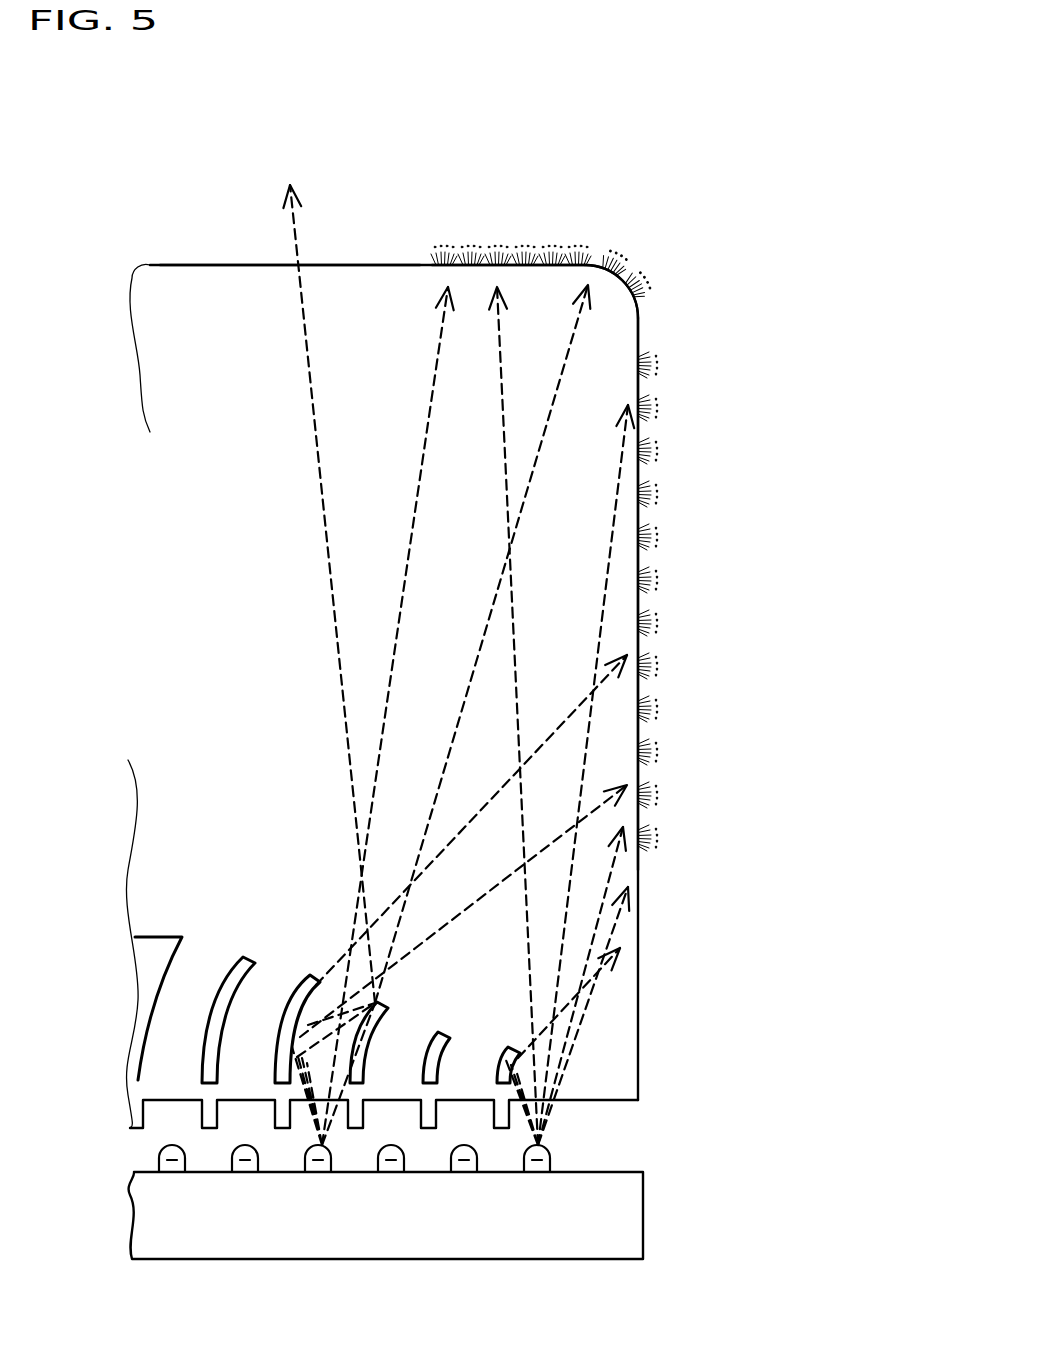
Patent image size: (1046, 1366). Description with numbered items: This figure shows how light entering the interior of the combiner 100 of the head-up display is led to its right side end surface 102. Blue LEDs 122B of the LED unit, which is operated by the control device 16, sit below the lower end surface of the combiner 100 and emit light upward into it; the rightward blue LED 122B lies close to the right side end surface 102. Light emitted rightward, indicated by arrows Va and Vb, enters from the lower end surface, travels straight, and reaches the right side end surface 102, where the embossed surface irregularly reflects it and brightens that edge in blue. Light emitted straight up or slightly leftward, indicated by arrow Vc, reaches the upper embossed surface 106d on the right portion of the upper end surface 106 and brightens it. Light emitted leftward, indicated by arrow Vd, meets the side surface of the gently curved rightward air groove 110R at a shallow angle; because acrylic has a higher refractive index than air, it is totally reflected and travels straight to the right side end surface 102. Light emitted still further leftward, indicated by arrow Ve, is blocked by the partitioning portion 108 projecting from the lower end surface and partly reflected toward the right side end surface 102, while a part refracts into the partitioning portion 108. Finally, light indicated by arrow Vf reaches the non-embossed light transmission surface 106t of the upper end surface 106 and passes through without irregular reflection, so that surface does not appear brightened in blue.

The combiner 100 is at (720, 201).
The right side end surface 102 is at (703, 508).
The upper end surface 106 is at (352, 176).
The light transmission surface 106t is at (243, 244).
The upper embossed surface 106d is at (536, 228).
The partitioning portion 108 is at (498, 1115).
The rightward air groove 110R is at (289, 975).
The blue LED 122B is at (332, 1163).
The control device 16 is at (643, 1217).
The arrow Vf is at (328, 565).
The arrow Vc is at (528, 895).
The arrow Vd is at (605, 920).
The arrow Ve is at (597, 990).
The arrow Va is at (570, 1050).
The arrow Vb is at (553, 1073).